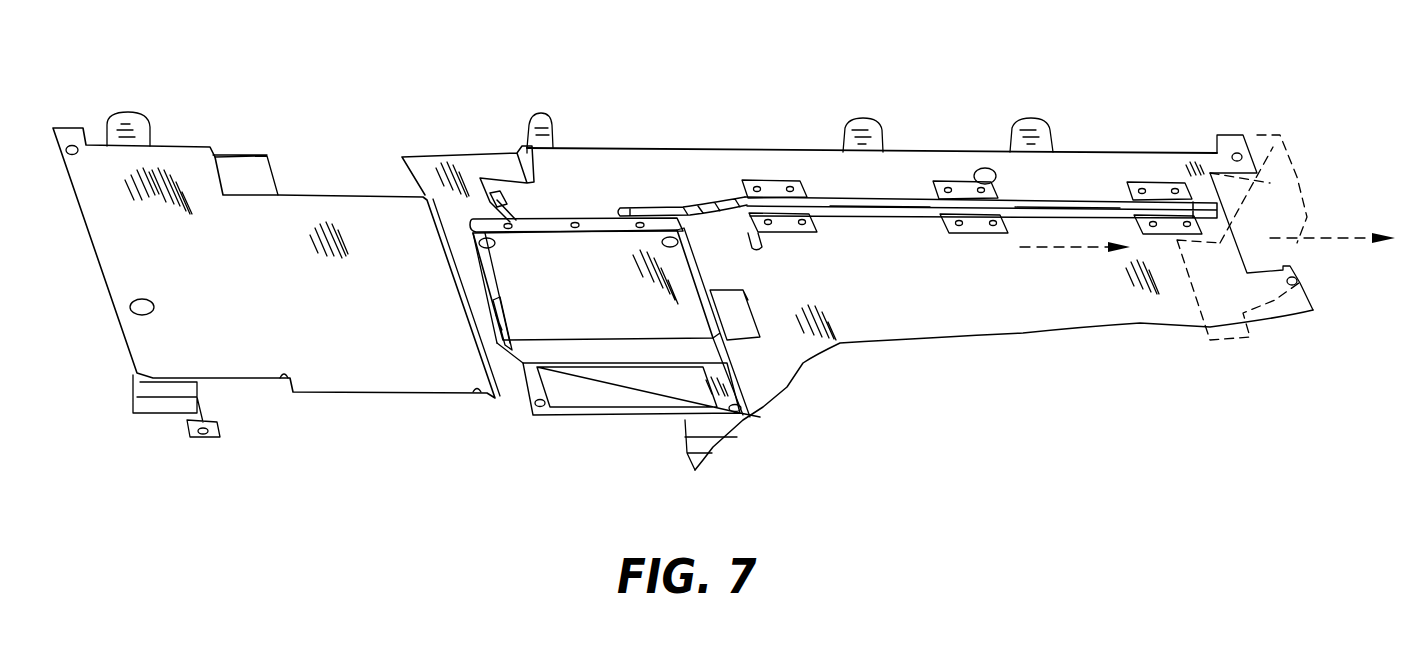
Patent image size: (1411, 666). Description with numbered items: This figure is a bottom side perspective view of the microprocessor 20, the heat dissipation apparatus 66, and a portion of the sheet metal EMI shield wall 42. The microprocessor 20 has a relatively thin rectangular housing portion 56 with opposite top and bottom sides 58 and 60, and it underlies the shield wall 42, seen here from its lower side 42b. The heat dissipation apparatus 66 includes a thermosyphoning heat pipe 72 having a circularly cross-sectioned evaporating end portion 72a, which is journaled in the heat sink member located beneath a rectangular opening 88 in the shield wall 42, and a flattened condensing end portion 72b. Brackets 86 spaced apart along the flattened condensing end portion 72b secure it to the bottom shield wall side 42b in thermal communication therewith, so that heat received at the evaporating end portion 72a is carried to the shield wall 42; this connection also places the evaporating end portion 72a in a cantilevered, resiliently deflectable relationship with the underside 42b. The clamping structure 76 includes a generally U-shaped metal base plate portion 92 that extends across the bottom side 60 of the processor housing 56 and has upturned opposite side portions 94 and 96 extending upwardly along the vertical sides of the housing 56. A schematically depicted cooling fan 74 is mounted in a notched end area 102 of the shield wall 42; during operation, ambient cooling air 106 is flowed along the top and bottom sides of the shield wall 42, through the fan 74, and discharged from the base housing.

The microprocessor 20 is at (530, 291).
The EMI shield wall 42 is at (364, 185).
The lower side of shield wall 42b is at (953, 272).
The housing portion 56 is at (473, 271).
The top side of housing 58 is at (549, 211).
The bottom side of housing 60 is at (613, 297).
The heat dissipation apparatus 66 is at (679, 115).
The thermosyphoning heat pipe 72 is at (1090, 188).
The evaporating end portion 72a is at (615, 212).
The condensing end portion 72b is at (881, 218).
The cooling fan 74 is at (1297, 180).
The clamping structure 76 is at (657, 358).
The brackets 86 is at (776, 181).
The rectangular opening 88 is at (745, 307).
The base plate portion 92 is at (568, 353).
The upturned side portion 94 is at (503, 350).
The upturned side portion 96 is at (733, 352).
The notched end area 102 is at (1243, 253).
The ambient cooling air 106 is at (1327, 238).